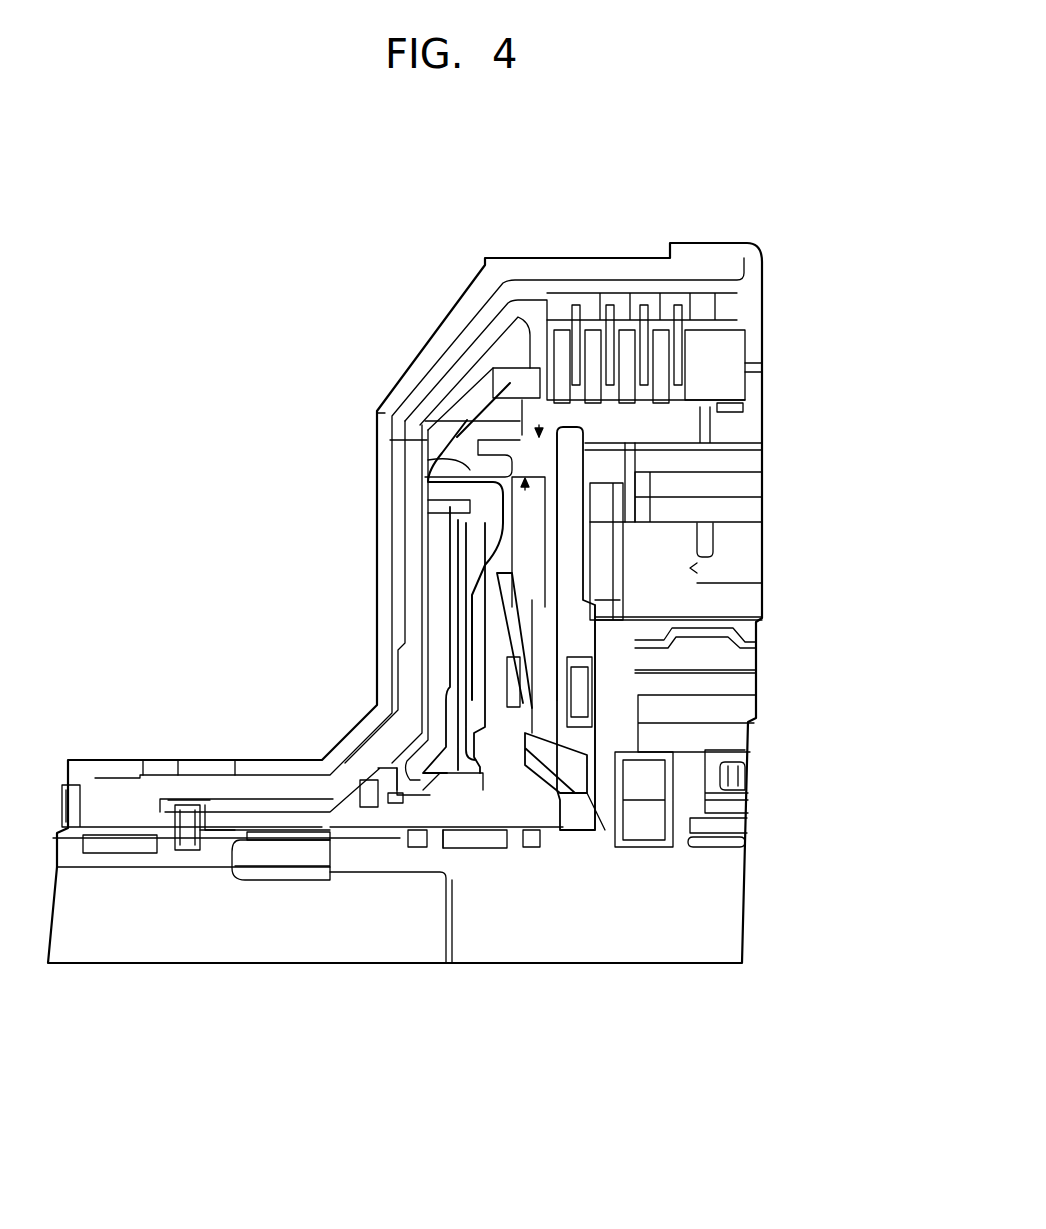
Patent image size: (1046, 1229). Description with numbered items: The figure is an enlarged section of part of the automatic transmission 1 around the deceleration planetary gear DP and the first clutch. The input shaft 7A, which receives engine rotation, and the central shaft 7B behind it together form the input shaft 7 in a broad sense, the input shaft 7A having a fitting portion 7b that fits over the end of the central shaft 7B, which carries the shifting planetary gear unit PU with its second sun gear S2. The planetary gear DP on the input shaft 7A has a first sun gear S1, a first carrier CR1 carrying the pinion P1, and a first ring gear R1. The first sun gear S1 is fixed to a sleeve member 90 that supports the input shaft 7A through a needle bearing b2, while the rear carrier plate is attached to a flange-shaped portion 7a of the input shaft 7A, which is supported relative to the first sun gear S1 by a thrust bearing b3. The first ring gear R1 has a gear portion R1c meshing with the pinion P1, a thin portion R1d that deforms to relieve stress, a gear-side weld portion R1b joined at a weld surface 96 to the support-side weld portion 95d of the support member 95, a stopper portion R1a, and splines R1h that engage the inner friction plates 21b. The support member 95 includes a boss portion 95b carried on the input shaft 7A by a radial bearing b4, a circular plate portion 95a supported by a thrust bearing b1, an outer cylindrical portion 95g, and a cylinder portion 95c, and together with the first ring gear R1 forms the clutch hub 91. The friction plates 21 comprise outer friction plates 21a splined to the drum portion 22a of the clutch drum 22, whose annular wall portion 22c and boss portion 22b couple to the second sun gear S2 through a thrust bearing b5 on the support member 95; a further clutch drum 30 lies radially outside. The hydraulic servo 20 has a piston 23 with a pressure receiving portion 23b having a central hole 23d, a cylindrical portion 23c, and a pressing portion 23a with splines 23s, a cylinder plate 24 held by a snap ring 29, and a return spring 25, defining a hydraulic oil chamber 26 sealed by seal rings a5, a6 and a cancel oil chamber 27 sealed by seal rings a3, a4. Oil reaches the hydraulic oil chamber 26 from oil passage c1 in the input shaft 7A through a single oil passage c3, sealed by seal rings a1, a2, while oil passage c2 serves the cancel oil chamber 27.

The automatic transmission 1 is at (210, 410).
The input shaft 7 is at (388, 1012).
The input shaft 7A is at (492, 945).
The central shaft 7B is at (410, 945).
The flange-shaped portion 7a is at (705, 775).
The fitting portion 7b is at (265, 870).
The hydraulic servo 20 is at (320, 532).
The friction plates 21 is at (592, 196).
The outer friction plates 21a is at (600, 350).
The inner friction plates 21b is at (638, 360).
The clutch drum 22 is at (395, 573).
The drum portion 22a is at (735, 297).
The boss portion 22b is at (120, 790).
The annular wall portion 22c is at (408, 662).
The piston 23 is at (427, 460).
The pressing portion 23a is at (530, 368).
The pressure receiving portion 23b is at (470, 612).
The cylindrical portion 23c is at (440, 478).
The central hole 23d is at (560, 780).
The splines 23s is at (488, 363).
The cylinder plate 24 is at (437, 628).
The return spring 25 is at (508, 620).
The hydraulic oil chamber 26 is at (448, 685).
The cancel oil chamber 27 is at (528, 542).
The snap ring 29 is at (395, 790).
The clutch drum 30 is at (412, 380).
The sleeve member 90 is at (735, 818).
The clutch hub 91 is at (605, 458).
The support member 95 is at (578, 862).
The circular plate portion 95a is at (600, 597).
The boss portion 95b is at (270, 815).
The cylinder portion 95c is at (528, 485).
The support-side weld portion 95d is at (522, 442).
The outer cylindrical portion 95g is at (405, 440).
The weld surface 96 is at (430, 412).
The first ring gear R1 is at (755, 425).
The stopper portion R1a is at (750, 385).
The gear-side weld portion R1b is at (467, 355).
The gear portion R1c is at (700, 400).
The thin portion R1d is at (570, 400).
The splines R1h is at (530, 365).
The pinion P1 is at (735, 483).
The first carrier CR1 is at (605, 512).
The first sun gear S1 is at (735, 738).
The second sun gear S2 is at (138, 855).
The planetary gear DP is at (778, 630).
The planetary gear unit PU is at (72, 890).
The seal ring a1 is at (418, 845).
The seal ring a2 is at (532, 845).
The seal ring a3 is at (445, 780).
The seal ring a4 is at (508, 473).
The seal ring a5 is at (395, 787).
The seal ring a6 is at (470, 518).
The thrust bearing b1 is at (570, 700).
The needle bearing b2 is at (735, 845).
The thrust bearing b3 is at (637, 812).
The radial bearing b4 is at (312, 850).
The thrust bearing b5 is at (190, 860).
The oil passage c1 is at (480, 840).
The oil passage c2 is at (568, 800).
The oil passage c3 is at (455, 835).